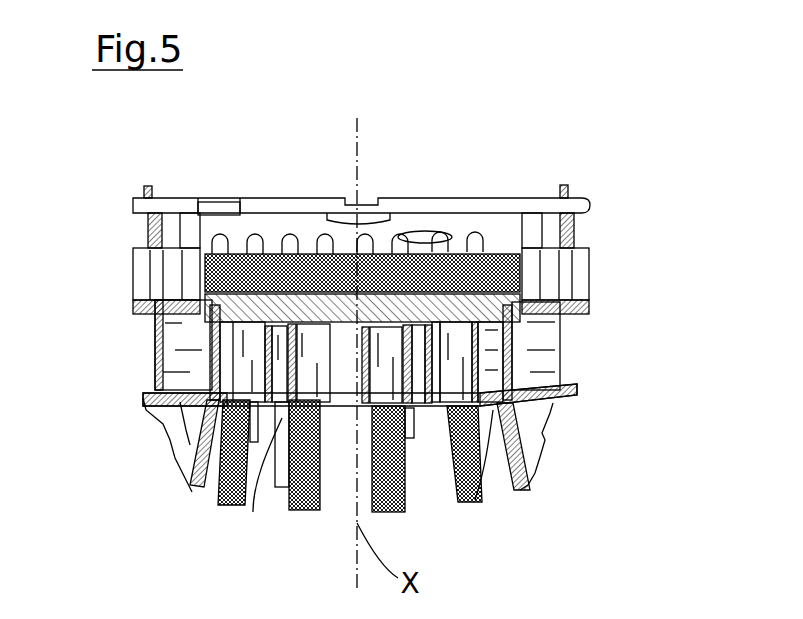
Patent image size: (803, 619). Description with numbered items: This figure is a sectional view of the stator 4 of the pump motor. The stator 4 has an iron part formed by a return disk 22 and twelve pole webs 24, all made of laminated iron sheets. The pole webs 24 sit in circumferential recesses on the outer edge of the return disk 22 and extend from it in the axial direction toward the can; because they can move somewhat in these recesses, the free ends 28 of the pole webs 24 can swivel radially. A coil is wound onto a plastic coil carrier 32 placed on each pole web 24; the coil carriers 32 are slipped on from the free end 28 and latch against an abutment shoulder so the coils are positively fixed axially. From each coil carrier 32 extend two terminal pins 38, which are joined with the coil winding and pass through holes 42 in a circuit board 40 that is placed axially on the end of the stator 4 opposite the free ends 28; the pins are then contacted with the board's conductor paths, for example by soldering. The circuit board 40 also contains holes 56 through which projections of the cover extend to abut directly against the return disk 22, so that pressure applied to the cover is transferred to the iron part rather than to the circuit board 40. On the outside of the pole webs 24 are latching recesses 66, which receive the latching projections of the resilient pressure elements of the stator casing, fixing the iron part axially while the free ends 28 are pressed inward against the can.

The stator 4 is at (607, 280).
The return disk 22 is at (237, 292).
The pole webs 24 is at (412, 462).
The free ends 28 is at (538, 470).
The coil carrier 32 is at (565, 343).
The terminal pins 38 is at (148, 186).
The circuit board 40 is at (427, 208).
The holes 42 is at (147, 222).
The holes 56 is at (230, 208).
The latching recesses 66 is at (553, 435).